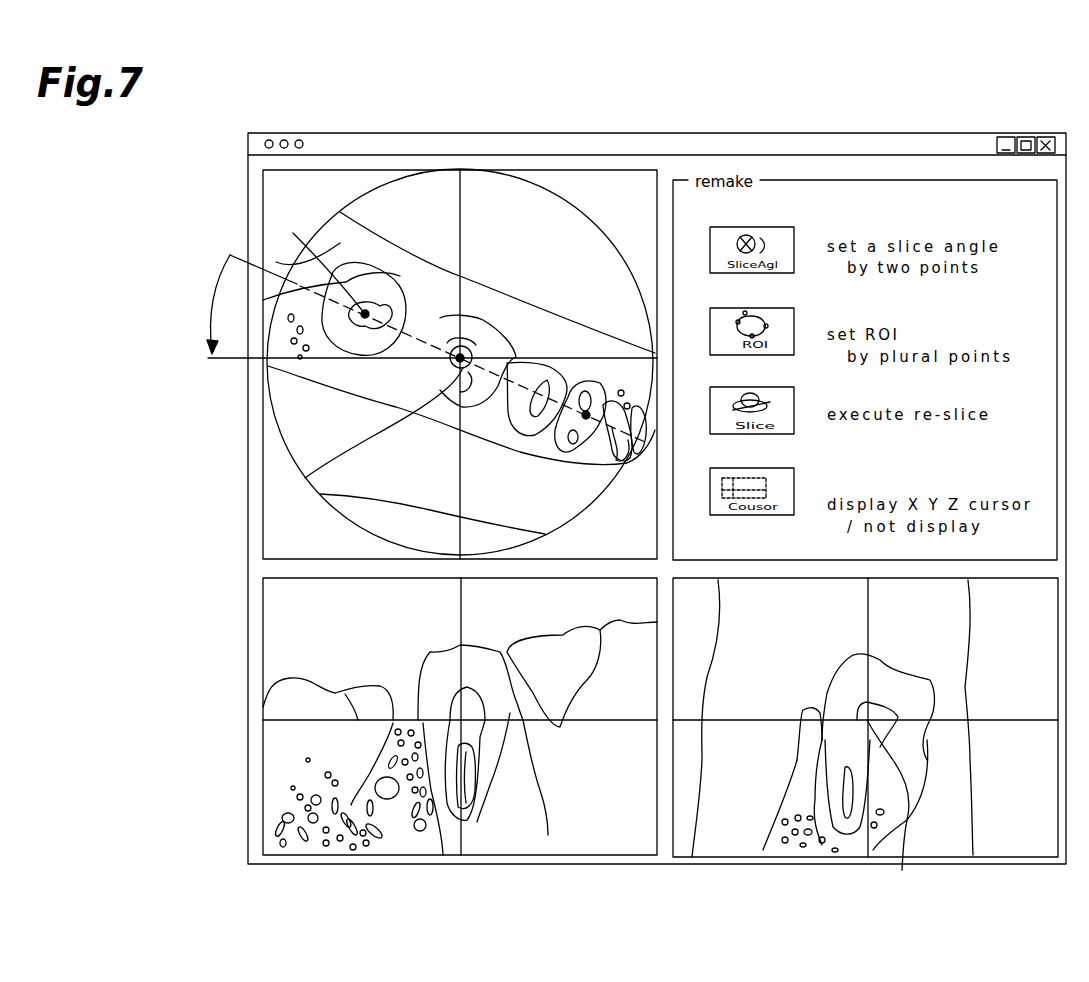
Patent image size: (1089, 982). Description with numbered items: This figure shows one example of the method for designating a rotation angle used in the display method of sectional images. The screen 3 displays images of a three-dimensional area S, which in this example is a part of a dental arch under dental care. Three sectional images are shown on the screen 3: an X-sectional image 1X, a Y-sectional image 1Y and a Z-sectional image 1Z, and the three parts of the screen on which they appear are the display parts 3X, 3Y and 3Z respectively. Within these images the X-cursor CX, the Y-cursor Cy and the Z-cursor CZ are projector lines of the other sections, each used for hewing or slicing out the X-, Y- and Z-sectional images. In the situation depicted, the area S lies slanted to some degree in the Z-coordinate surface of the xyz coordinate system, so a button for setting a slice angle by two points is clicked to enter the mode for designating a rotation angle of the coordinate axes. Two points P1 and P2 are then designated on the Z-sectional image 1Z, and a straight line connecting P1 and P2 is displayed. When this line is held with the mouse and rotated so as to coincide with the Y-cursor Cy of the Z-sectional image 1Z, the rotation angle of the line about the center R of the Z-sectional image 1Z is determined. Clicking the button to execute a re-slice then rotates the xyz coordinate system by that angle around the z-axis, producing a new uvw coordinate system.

The screen 3 is at (783, 133).
The Z-sectional image 1Z is at (568, 188).
The display part for Z-sectional image 3Z is at (460, 327).
The Y-sectional image 1Y is at (575, 840).
The display part for Y-sectional image 3Y is at (460, 743).
The X-sectional image 1X is at (733, 840).
The display part for X-sectional image 3X is at (865, 744).
The X-cursor CX is at (458, 205).
The Y-cursor Cy is at (580, 356).
The Z-cursor CZ is at (364, 718).
The three-dimensional area S is at (484, 262).
The first designated point P1 is at (319, 259).
The second designated point P2 is at (587, 418).
The center of the Z-sectional image R is at (306, 486).